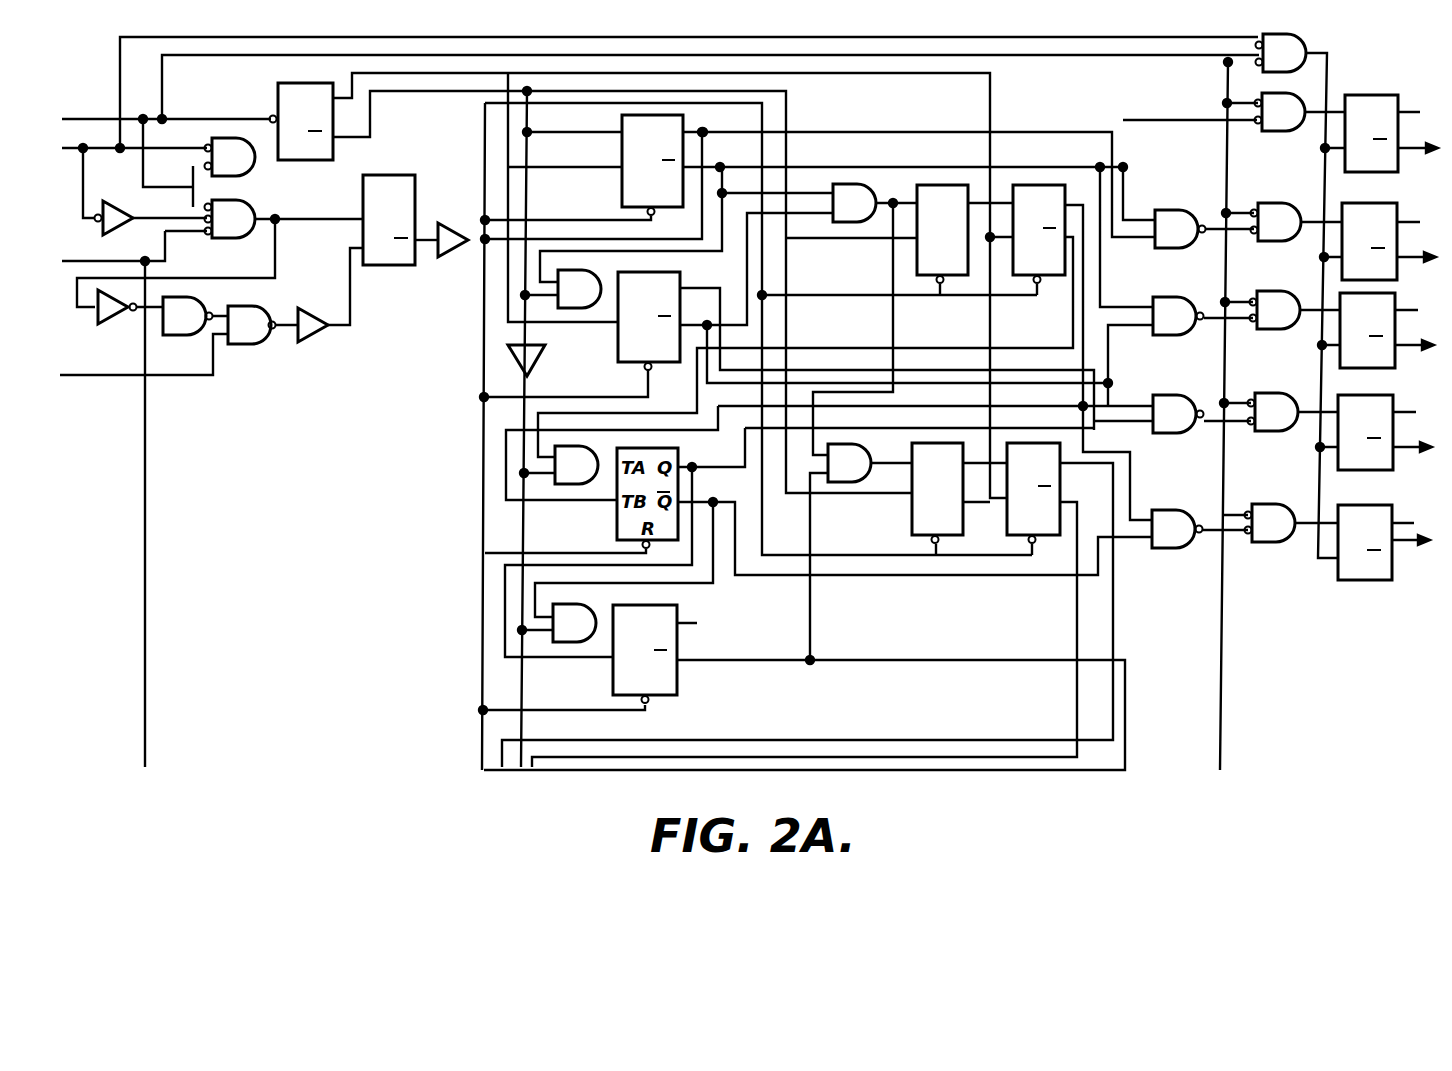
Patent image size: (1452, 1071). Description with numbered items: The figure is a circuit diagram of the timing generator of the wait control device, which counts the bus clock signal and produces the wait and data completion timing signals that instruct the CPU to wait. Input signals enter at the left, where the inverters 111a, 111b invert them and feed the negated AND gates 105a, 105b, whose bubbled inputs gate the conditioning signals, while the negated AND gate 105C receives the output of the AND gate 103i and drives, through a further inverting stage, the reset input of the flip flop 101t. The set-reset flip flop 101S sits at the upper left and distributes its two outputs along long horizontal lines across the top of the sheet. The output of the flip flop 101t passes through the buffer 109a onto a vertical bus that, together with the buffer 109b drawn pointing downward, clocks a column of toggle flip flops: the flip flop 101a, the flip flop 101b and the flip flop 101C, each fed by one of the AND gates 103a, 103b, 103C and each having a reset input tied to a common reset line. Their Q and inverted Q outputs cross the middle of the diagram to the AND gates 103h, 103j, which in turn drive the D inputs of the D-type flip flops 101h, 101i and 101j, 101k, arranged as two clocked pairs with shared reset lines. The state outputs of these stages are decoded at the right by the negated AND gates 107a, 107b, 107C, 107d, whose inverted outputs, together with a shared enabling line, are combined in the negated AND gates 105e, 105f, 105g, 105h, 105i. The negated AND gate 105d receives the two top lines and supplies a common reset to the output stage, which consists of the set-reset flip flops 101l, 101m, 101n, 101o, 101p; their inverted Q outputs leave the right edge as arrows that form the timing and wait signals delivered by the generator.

The flip flop 101S is at (286, 88).
The flip flop 101t is at (372, 178).
The flip flop 101a is at (622, 178).
The flip flop 101b is at (672, 272).
The flip flop 101C is at (665, 698).
The flip flop 101h is at (942, 185).
The flip flop 101i is at (1025, 185).
The flip flop 101j is at (918, 536).
The flip flop 101k is at (1012, 536).
The flip flop 101l is at (1372, 96).
The flip flop 101m is at (1370, 204).
The flip flop 101n is at (1368, 368).
The flip flop 101o is at (1358, 472).
The flip flop 101p is at (1358, 582).
The AND gate 103a is at (580, 308).
The AND gate 103b is at (583, 487).
The AND gate 103C is at (588, 645).
The AND gate 103h is at (852, 222).
The AND gate 103i is at (195, 335).
The AND gate 103j is at (848, 482).
The negated AND gate 105a is at (244, 172).
The negated AND gate 105b is at (247, 237).
The negated AND gate 105C is at (244, 342).
The negated AND gate 105d is at (1284, 42).
The negated AND gate 105e is at (1285, 132).
The negated AND gate 105f is at (1280, 242).
The negated AND gate 105g is at (1280, 330).
The negated AND gate 105h is at (1278, 432).
The negated AND gate 105i is at (1276, 543).
The AND gate 107a is at (1182, 212).
The AND gate 107b is at (1182, 334).
The AND gate 107C is at (1182, 436).
The AND gate 107d is at (1180, 548).
The buffer 109a is at (456, 258).
The buffer 109b is at (536, 360).
The inverter 111a is at (110, 322).
The inverter 111b is at (112, 228).